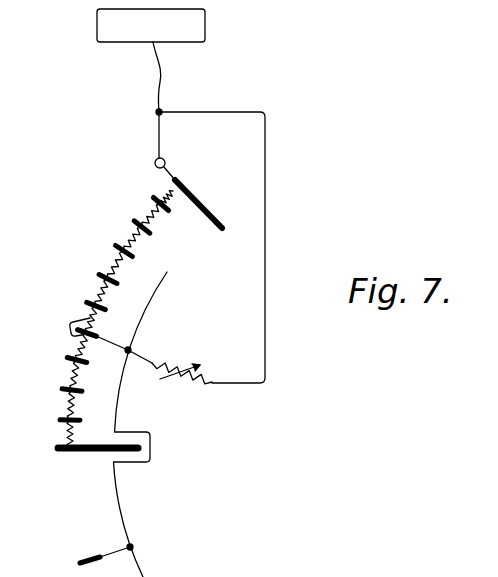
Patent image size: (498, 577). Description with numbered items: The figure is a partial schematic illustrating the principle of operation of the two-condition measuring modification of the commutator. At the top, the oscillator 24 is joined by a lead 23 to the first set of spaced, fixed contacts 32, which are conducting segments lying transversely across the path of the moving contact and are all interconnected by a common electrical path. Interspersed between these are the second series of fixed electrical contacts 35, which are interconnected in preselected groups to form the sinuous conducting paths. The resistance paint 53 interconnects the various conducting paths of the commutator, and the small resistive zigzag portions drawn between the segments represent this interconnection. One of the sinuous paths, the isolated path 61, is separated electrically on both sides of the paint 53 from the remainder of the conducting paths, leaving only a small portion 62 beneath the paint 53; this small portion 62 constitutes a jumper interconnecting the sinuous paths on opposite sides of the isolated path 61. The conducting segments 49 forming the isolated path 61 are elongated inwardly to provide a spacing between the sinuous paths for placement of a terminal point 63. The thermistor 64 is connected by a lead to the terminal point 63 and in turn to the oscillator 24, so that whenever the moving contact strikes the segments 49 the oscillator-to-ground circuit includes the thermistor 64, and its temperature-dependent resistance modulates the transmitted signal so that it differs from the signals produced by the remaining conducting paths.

The oscillator 24 is at (100, 38).
The lead 23 is at (162, 81).
The fixed contacts 32 is at (207, 200).
The resistance paint 53 is at (176, 192).
The conducting segments 49 is at (138, 220).
The fixed electrical contacts 35 is at (85, 452).
The small portion 62 is at (70, 322).
The terminal point 63 is at (128, 350).
The thermistor 64 is at (203, 385).
The isolated path 61 is at (117, 408).